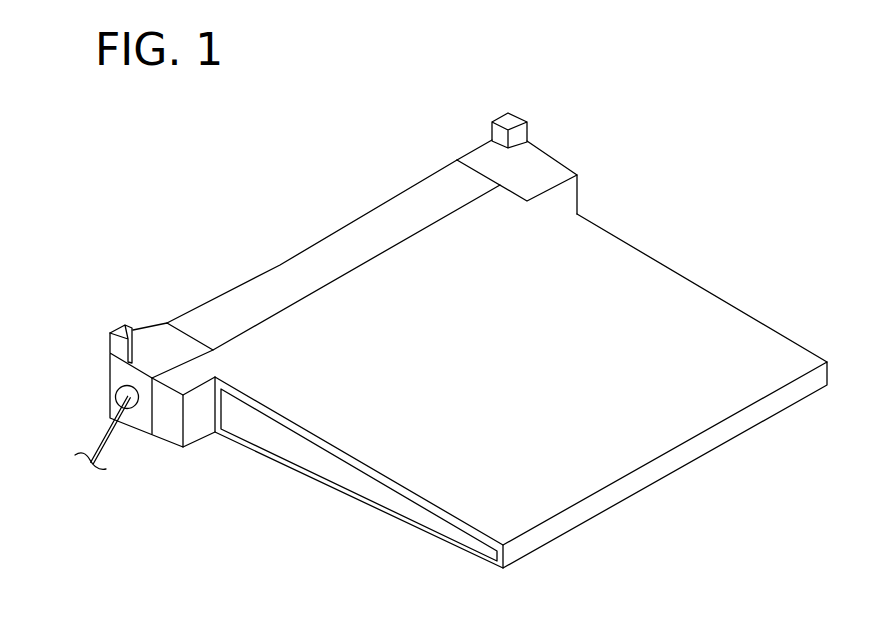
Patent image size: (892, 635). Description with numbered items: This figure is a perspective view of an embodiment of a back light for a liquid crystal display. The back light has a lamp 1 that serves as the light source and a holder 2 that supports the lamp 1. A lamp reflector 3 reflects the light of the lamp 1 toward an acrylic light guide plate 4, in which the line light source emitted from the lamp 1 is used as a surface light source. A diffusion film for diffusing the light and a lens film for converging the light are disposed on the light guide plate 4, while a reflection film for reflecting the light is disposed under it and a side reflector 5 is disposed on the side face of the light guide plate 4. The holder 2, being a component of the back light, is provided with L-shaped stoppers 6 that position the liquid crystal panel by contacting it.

The lamp 1 is at (112, 388).
The holder 2 is at (180, 341).
The lamp reflector 3 is at (323, 257).
The acrylic light guide plate 4 is at (697, 297).
The side reflector 5 is at (365, 490).
The L-shaped stopper 6 is at (124, 329).